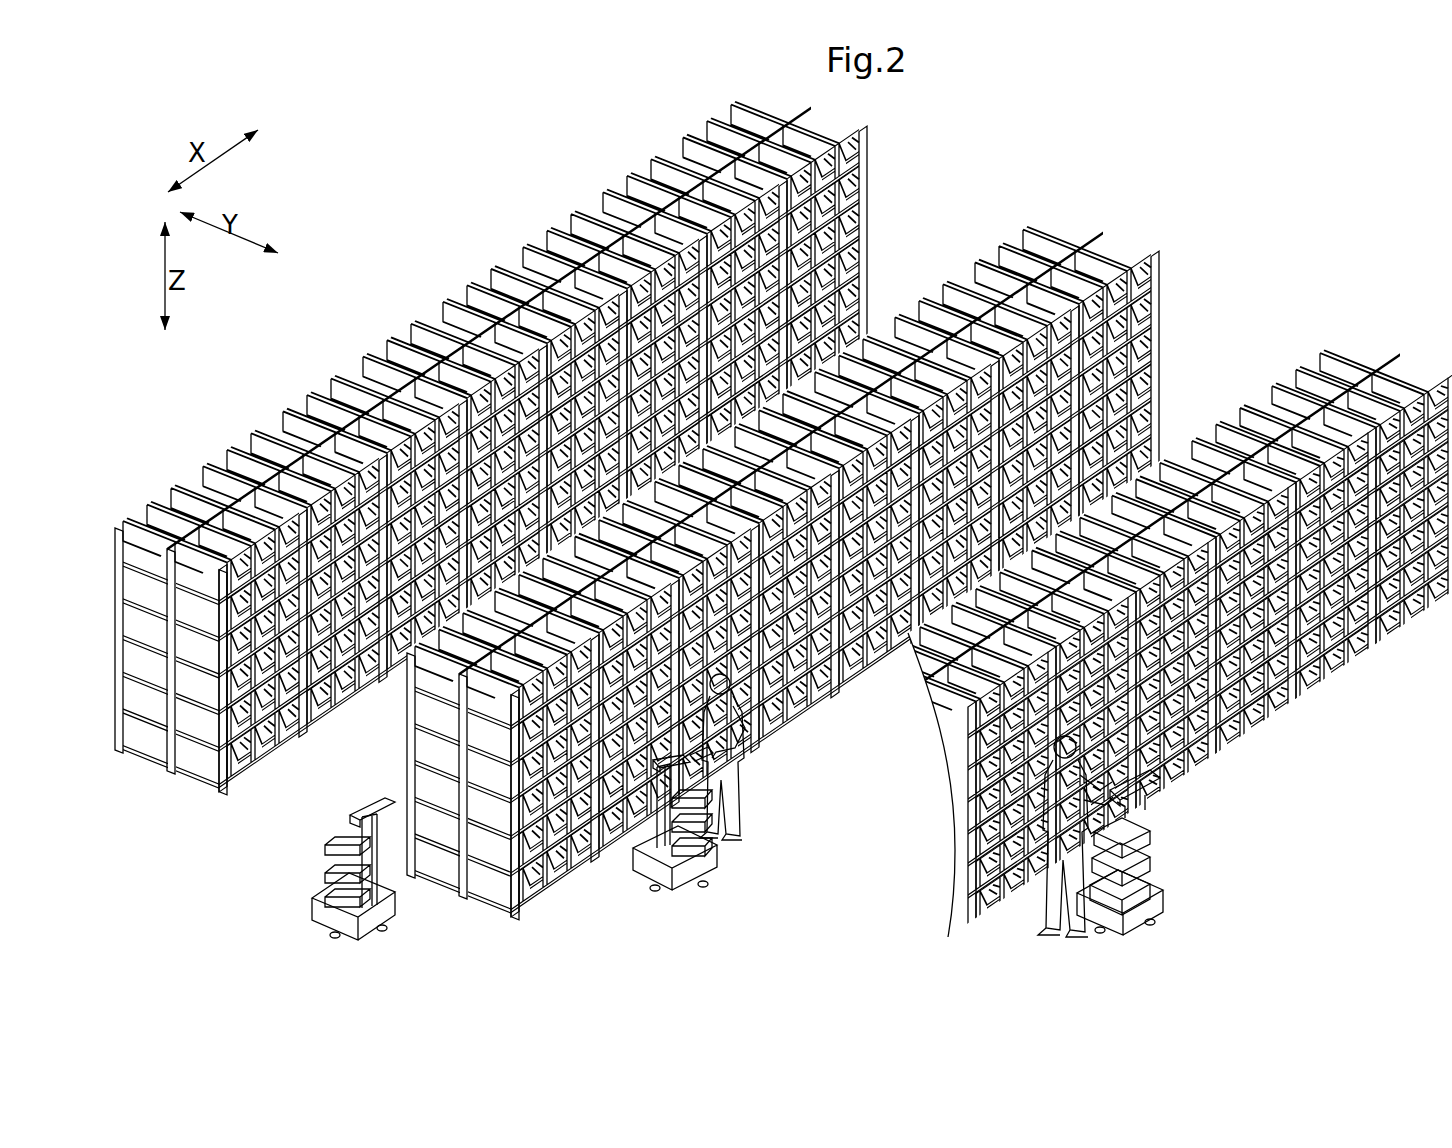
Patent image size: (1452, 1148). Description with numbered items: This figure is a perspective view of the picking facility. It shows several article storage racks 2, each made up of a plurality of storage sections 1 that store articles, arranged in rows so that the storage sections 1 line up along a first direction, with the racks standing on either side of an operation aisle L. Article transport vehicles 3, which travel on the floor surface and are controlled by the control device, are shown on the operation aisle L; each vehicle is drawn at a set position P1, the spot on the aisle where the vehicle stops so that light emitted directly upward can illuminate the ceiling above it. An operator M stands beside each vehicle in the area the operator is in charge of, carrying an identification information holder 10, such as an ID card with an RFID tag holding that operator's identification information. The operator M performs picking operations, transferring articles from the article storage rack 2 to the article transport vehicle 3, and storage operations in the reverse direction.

The storage section 1 is at (548, 235).
The article storage rack 2 is at (783, 503).
The article transport vehicle 3 is at (705, 872).
The identification information holder 10 is at (750, 752).
The operator M is at (755, 810).
The set position P1 is at (672, 898).
The operation aisle L is at (268, 823).